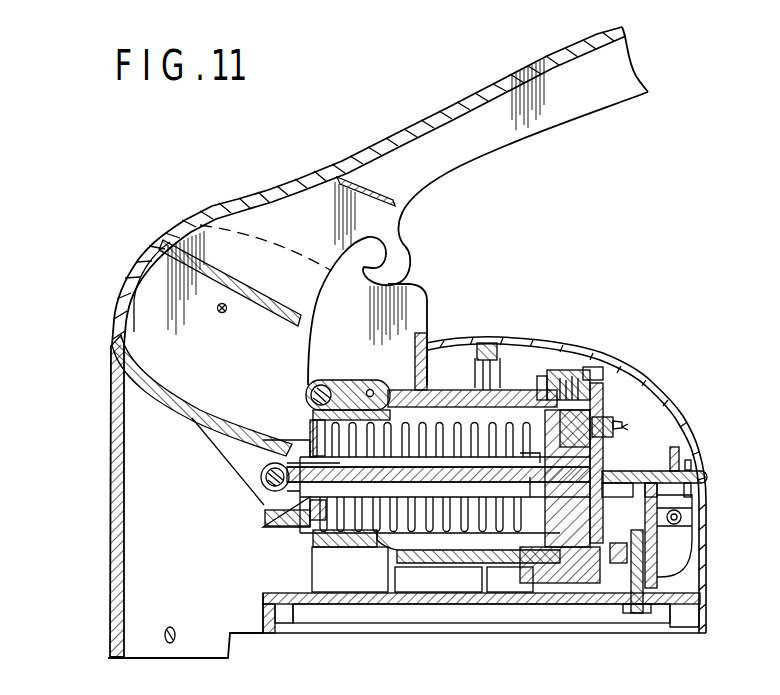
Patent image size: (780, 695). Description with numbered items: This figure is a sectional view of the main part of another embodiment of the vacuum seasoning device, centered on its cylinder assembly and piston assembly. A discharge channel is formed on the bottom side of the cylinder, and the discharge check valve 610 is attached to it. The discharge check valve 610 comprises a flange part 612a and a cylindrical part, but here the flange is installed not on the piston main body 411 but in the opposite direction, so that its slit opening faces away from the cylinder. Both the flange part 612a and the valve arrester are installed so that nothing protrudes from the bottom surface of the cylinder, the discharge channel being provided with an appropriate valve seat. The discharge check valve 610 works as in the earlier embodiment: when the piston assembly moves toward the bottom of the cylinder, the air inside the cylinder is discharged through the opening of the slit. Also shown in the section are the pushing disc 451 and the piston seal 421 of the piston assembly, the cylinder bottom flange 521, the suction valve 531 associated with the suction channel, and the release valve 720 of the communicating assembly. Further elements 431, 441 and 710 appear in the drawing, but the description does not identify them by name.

The piston main body 411 is at (580, 380).
The piston seal 421 is at (570, 407).
The piston rod 431 is at (407, 477).
The spring seat 441 is at (380, 537).
The pushing disc 451 is at (543, 427).
The cylinder bottom flange 521 is at (575, 383).
The suction valve 531 is at (690, 520).
The discharge check valve 610 is at (627, 426).
The flange part of discharge check valve 612a is at (613, 423).
The bolt 710 is at (644, 567).
The release valve 720 is at (640, 462).